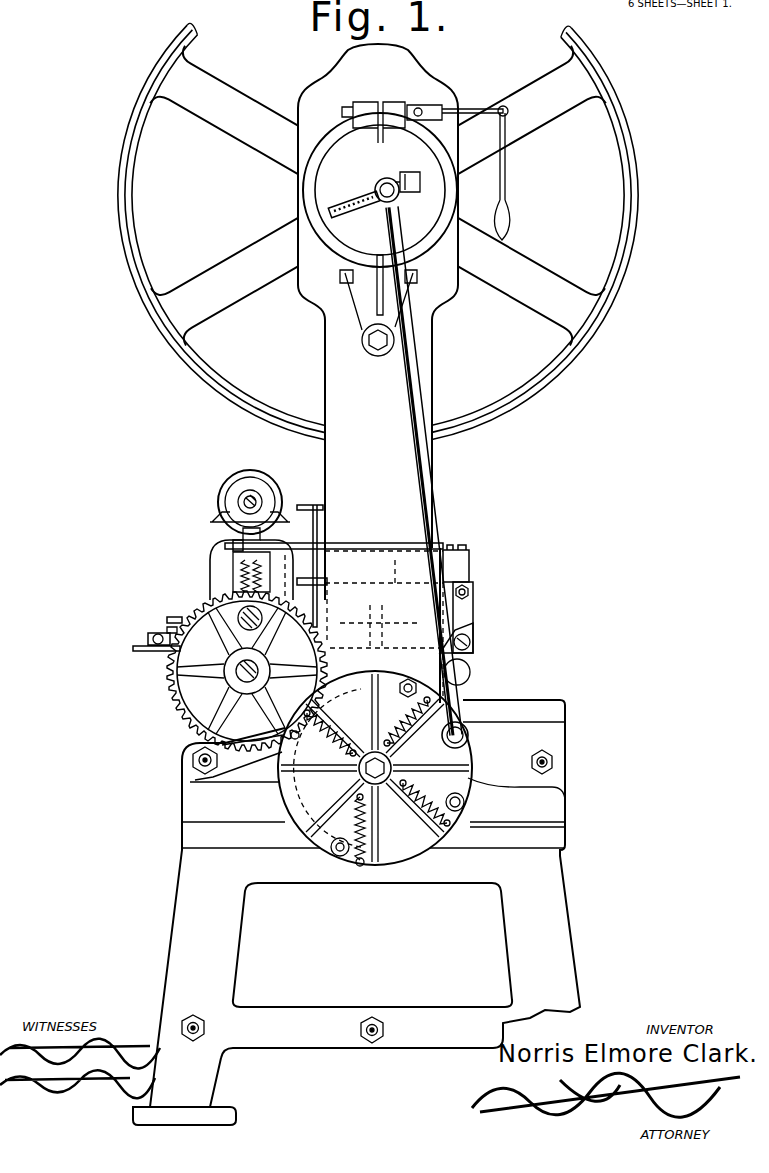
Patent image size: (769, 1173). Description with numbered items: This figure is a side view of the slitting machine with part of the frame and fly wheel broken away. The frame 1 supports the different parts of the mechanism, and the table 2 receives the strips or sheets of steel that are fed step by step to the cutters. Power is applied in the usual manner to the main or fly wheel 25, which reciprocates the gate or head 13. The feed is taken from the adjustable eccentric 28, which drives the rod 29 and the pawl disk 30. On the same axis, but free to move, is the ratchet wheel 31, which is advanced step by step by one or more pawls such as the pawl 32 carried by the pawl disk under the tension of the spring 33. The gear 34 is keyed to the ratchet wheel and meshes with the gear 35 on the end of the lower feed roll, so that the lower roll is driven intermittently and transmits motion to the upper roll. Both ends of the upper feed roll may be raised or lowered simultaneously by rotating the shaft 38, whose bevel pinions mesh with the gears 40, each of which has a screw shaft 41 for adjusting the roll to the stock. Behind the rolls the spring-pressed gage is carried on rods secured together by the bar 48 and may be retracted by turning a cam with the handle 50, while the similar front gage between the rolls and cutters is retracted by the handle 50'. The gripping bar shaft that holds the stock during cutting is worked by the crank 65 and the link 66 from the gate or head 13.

The frame 1 is at (552, 900).
The table 2 is at (135, 646).
The gate or head 13 is at (468, 572).
The main or fly wheel 25 is at (630, 245).
The adjustable eccentric 28 is at (330, 181).
The rod 29 is at (440, 505).
The pawl disk 30 is at (393, 865).
The ratchet wheel 31 is at (422, 858).
The pawl 32 is at (355, 855).
The spring 33 is at (320, 847).
The gear 34 is at (293, 788).
The gear 35 is at (170, 696).
The shaft 38 is at (245, 498).
The gear 40 is at (213, 520).
The screw shaft 41 is at (242, 575).
The bar 48 is at (148, 634).
The handle 50 is at (279, 581).
The handle 50' is at (303, 540).
The crank 65 is at (471, 642).
The link 66 is at (470, 612).